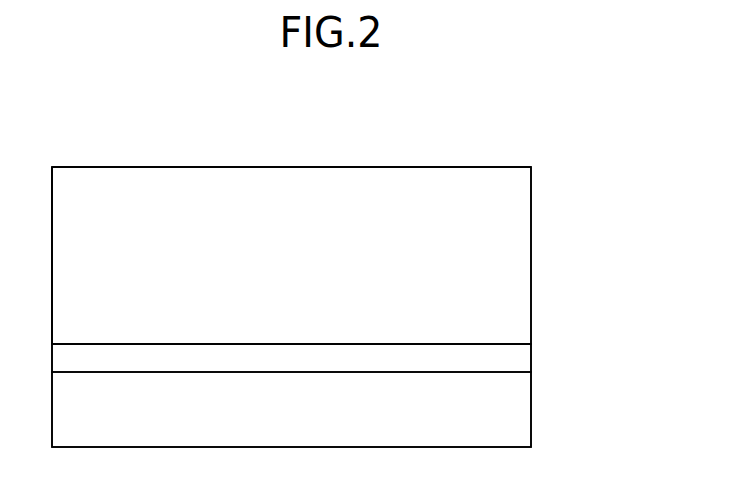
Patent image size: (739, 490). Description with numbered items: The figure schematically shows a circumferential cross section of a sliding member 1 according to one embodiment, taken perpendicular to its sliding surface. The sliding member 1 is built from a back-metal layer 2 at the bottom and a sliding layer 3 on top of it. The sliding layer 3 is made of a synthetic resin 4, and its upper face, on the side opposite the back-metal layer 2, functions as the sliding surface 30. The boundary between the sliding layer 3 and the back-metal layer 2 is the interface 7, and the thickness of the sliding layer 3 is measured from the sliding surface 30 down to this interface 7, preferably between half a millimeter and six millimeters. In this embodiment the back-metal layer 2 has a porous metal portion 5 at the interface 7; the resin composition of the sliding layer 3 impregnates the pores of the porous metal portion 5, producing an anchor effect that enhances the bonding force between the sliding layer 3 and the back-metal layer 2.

The sliding member 1 is at (545, 162).
The back-metal layer 2 is at (531, 408).
The sliding layer 3 is at (531, 271).
The synthetic resin 4 is at (91, 192).
The porous metal portion 5 is at (518, 362).
The interface 7 is at (455, 343).
The sliding surface 30 is at (242, 166).